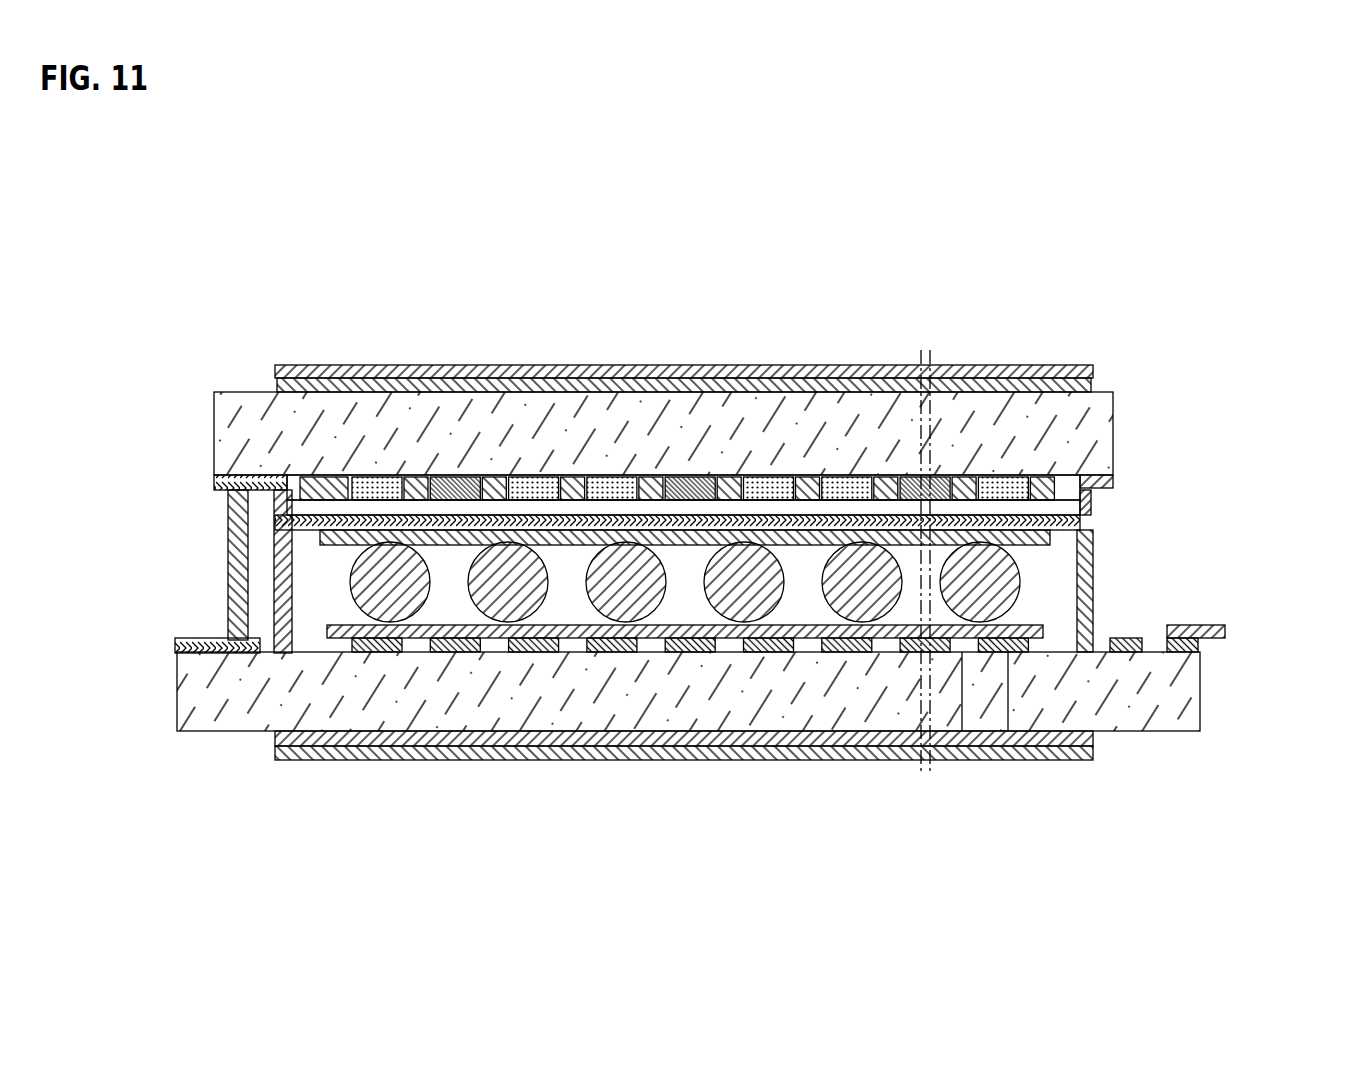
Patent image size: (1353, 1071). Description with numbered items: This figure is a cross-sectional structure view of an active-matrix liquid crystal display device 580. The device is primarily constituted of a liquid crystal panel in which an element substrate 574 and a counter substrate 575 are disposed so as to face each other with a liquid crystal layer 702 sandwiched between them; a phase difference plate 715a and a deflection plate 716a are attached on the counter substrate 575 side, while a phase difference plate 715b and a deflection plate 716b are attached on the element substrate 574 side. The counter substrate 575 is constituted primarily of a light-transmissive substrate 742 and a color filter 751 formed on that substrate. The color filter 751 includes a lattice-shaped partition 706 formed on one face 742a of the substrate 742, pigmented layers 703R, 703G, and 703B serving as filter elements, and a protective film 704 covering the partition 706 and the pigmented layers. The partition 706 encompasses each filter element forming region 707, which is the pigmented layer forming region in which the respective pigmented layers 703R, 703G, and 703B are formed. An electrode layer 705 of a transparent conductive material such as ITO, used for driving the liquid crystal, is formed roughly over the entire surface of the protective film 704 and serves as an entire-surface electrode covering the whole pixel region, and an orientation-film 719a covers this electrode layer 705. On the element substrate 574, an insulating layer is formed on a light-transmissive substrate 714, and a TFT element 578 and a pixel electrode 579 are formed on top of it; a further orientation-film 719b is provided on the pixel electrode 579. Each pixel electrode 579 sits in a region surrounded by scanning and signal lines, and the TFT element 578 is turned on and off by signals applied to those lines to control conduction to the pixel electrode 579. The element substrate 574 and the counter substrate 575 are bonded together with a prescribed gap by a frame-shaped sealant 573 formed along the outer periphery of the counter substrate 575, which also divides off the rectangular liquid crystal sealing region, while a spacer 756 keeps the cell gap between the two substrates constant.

The liquid crystal display device 580 is at (252, 286).
The counter substrate 575 is at (1132, 440).
The element substrate 574 is at (1230, 660).
The light-transmissive substrate 742 is at (1113, 422).
The one face of the substrate 742a is at (250, 392).
The deflection plate 716a is at (1028, 367).
The phase difference plate 715a is at (1106, 382).
The protective film 704 is at (1086, 490).
The pigmented layer 703R is at (608, 475).
The pigmented layer 703G is at (692, 475).
The pigmented layer 703B is at (773, 475).
The partition 706 is at (302, 476).
The filter element forming region 707 is at (373, 476).
The color filter 751 is at (1093, 507).
The electrode layer 705 is at (218, 483).
The orientation-film 719a is at (1050, 542).
The orientation-film 719b is at (1043, 627).
The sealant 573 is at (237, 605).
The liquid crystal layer 702 is at (313, 565).
The light-transmissive substrate 714 is at (1167, 722).
The phase difference plate 715b is at (1093, 738).
The deflection plate 716b is at (1073, 760).
The TFT element 578 is at (963, 731).
The pixel electrode 579 is at (1010, 732).
The spacer 756 is at (303, 762).